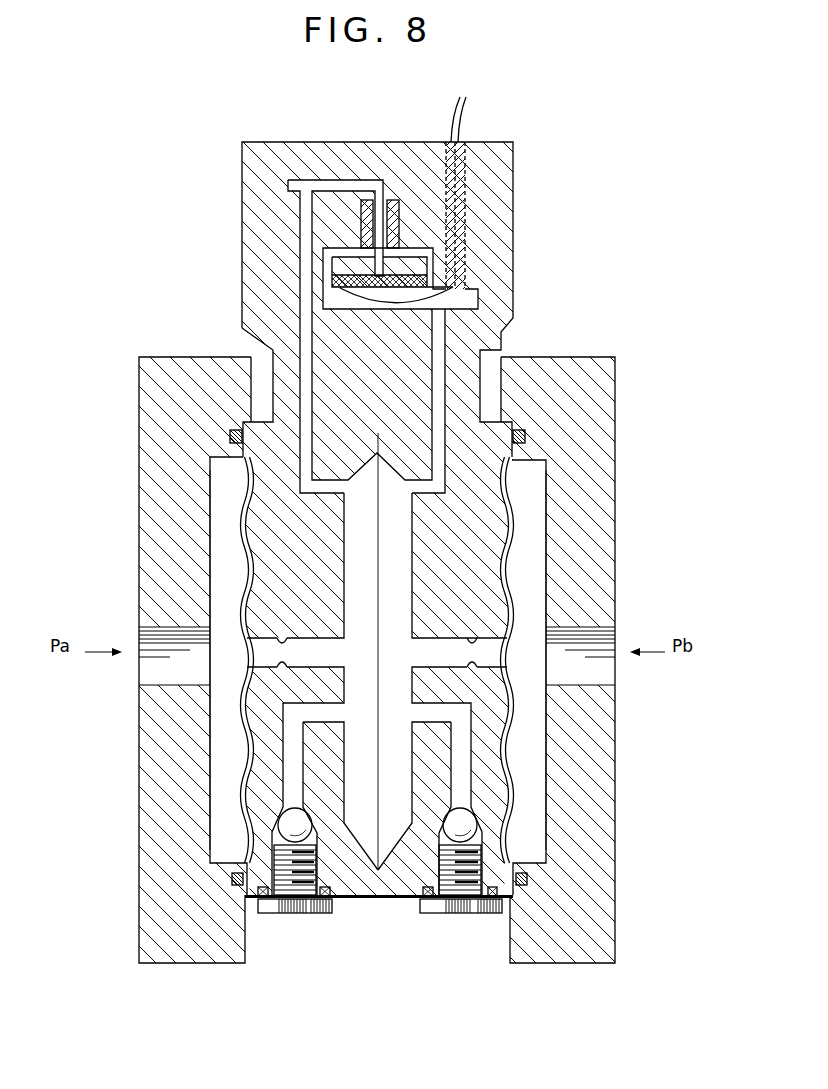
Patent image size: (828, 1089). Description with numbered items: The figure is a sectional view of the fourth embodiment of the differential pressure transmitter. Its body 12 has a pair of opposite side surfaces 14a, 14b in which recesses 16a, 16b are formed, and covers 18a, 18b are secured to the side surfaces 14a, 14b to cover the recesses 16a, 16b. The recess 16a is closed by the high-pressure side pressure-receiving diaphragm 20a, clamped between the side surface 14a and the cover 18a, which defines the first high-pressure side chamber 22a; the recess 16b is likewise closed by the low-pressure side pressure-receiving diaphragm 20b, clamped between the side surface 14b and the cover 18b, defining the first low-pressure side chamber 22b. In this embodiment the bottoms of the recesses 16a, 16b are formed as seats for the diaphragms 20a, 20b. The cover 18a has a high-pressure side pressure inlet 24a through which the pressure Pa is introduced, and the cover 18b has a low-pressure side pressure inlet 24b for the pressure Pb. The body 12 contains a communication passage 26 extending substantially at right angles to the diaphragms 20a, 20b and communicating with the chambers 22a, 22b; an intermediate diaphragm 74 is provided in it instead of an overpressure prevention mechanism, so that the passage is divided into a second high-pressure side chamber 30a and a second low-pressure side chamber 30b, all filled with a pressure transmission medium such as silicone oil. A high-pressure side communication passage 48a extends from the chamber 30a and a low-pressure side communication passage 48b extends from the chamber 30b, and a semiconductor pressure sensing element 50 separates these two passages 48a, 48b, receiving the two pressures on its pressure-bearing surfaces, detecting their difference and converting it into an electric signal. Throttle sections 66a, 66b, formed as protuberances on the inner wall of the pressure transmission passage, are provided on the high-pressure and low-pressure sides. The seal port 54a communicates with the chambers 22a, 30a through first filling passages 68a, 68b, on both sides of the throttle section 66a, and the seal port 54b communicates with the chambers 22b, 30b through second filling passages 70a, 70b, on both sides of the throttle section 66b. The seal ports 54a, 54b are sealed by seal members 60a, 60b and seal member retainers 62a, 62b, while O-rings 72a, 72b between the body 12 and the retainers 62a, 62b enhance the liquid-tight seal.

The body 12 is at (512, 215).
The side surface 14a is at (228, 438).
The side surface 14b is at (517, 428).
The recess 16a is at (242, 480).
The recess 16b is at (512, 480).
The cover 18a is at (150, 562).
The cover 18b is at (606, 512).
The high-pressure side pressure-receiving diaphragm 20a is at (262, 742).
The low-pressure side pressure-receiving diaphragm 20b is at (492, 766).
The first high-pressure side chamber 22a is at (228, 546).
The first low-pressure side chamber 22b is at (525, 598).
The high-pressure side pressure inlet 24a is at (160, 670).
The low-pressure side pressure inlet 24b is at (596, 676).
The communication passage 26 is at (402, 566).
The second high-pressure side chamber 30a is at (355, 515).
The second low-pressure side chamber 30b is at (395, 545).
The high-pressure side communication passage 48a is at (305, 272).
The low-pressure side communication passage 48b is at (446, 336).
The semiconductor pressure sensing element 50 is at (410, 268).
The seal port 54a is at (345, 900).
The seal port 54b is at (408, 898).
The seal member 60a is at (285, 822).
The seal member 60b is at (470, 820).
The seal member retainer 62a is at (282, 914).
The seal member retainer 62b is at (465, 914).
The first throttle section 66a is at (277, 627).
The second throttle section 66b is at (477, 667).
The first filling passage 68a is at (275, 846).
The first filling passage 68b is at (290, 750).
The second filling passage 70a is at (485, 826).
The second filling passage 70b is at (465, 780).
The O-ring 72a is at (244, 889).
The O-ring 72b is at (519, 888).
The intermediate diaphragm 74 is at (385, 830).